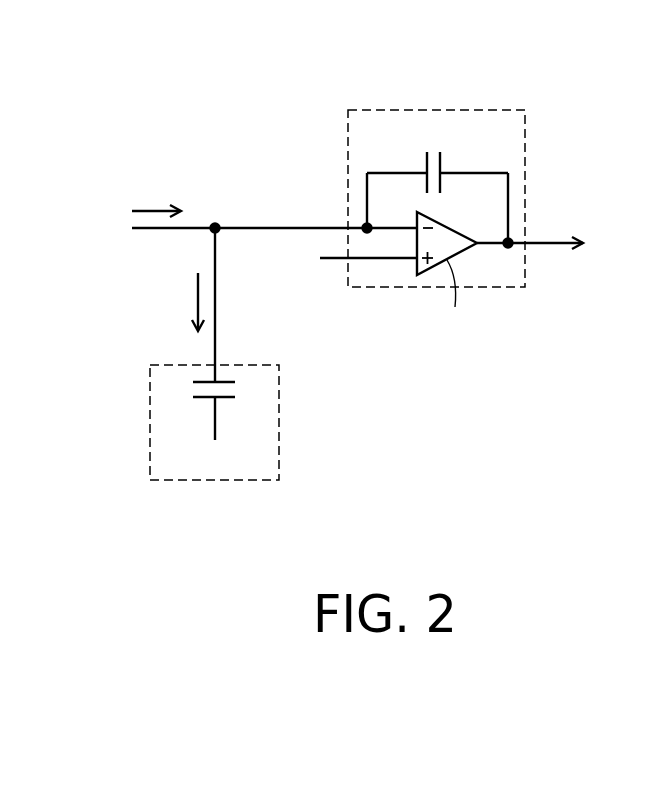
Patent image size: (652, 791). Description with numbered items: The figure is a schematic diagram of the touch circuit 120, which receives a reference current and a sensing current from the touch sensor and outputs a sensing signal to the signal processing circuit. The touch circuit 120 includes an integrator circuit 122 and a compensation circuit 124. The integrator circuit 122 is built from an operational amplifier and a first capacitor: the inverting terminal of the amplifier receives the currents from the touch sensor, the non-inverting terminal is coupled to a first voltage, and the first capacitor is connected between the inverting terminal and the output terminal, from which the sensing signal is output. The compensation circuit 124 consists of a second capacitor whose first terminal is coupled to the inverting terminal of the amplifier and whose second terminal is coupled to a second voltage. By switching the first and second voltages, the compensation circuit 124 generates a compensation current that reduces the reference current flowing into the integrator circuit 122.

The touch circuit 120 is at (618, 495).
The integrator circuit 122 is at (473, 110).
The compensation circuit 124 is at (279, 411).